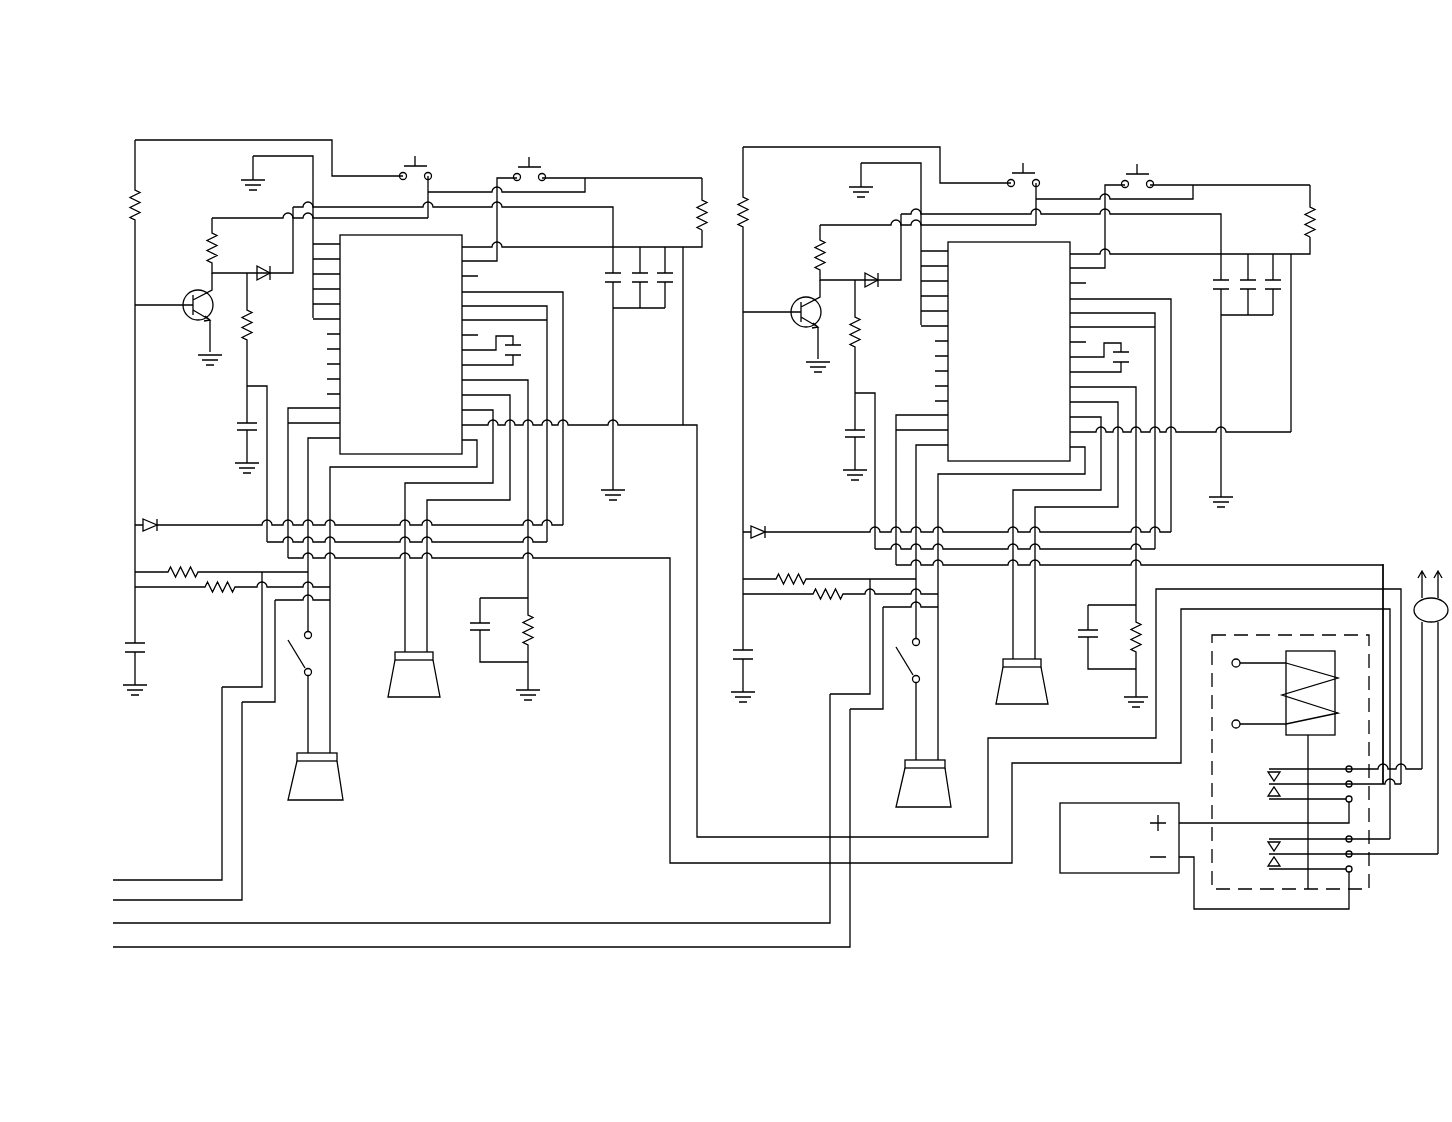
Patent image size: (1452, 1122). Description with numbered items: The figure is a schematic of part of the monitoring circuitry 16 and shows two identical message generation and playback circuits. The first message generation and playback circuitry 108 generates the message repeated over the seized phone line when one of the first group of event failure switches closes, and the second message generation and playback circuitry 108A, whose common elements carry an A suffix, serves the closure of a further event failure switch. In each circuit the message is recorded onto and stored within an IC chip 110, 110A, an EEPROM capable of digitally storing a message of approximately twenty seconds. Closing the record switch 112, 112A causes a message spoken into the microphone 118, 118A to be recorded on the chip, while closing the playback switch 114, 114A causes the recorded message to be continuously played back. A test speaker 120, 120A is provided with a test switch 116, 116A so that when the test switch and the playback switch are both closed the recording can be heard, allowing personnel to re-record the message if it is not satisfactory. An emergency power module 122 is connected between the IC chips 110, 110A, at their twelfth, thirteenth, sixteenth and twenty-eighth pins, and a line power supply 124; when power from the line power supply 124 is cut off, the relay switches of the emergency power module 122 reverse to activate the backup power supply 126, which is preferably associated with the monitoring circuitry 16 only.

The monitoring circuitry 16 is at (707, 136).
The message generation and playback circuitry 108A is at (371, 128).
The message generation and playback circuitry 108 is at (742, 192).
The IC chip 110A is at (432, 310).
The IC chip 110 is at (1003, 351).
The record switch 112A is at (423, 165).
The record switch 112 is at (1059, 167).
The playback switch 114A is at (582, 143).
The playback switch 114 is at (1181, 165).
The test switch 116A is at (304, 673).
The test switch 116 is at (856, 662).
The microphone 118A is at (418, 697).
The microphone 118 is at (999, 698).
The test speaker 120A is at (320, 800).
The test speaker 120 is at (909, 834).
The emergency power module 122 is at (1233, 887).
The line power supply 124 is at (1425, 598).
The backup power supply 126 is at (1058, 825).